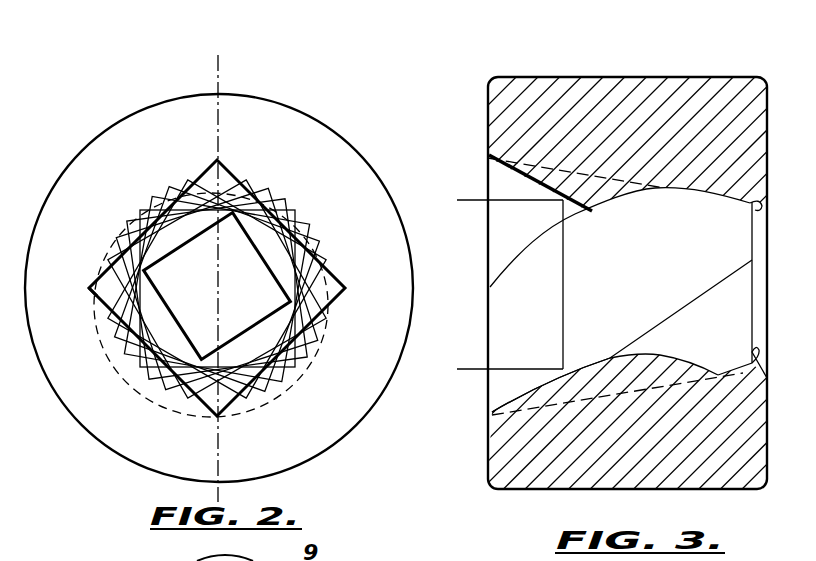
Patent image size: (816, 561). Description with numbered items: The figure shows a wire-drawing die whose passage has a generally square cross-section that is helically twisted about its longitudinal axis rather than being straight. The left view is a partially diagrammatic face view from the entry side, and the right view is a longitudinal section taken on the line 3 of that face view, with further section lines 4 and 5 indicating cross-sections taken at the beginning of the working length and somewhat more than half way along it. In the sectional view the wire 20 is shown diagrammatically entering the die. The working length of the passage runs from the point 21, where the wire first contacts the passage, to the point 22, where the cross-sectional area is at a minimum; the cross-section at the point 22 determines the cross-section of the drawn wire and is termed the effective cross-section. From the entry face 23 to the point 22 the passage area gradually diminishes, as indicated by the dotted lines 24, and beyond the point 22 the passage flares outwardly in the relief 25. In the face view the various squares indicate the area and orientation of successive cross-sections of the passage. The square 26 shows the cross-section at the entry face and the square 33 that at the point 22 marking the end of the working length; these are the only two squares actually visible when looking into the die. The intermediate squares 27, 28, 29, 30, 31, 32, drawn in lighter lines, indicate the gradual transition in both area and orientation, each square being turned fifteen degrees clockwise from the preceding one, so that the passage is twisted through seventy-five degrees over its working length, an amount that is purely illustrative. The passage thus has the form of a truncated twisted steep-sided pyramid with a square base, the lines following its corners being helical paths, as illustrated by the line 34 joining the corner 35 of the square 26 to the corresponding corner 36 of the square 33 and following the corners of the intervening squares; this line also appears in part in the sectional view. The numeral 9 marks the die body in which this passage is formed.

In FIG. 2, the section line 3— 3 is at (219, 73).
In FIG. 3, the section line 4— 4 is at (562, 25).
In FIG. 3, the section line 5— 5 is at (676, 25).
In FIG. 2, the die body 9 is at (295, 127).
In FIG. 3, the die body 9 is at (491, 491).
In FIG. 3, the wire 20 is at (561, 299).
In FIG. 3, the point of first contact 21 is at (563, 202).
In FIG. 3, the point of minimum cross-section 22 is at (752, 352).
In FIG. 3, the entry face 23 is at (500, 447).
In FIG. 3, the dotted lines 24 is at (638, 174).
In FIG. 3, the relief 25 is at (756, 210).
In FIG. 2, the square at entry face 26 is at (229, 164).
In FIG. 2, the intermediate square 27 is at (258, 180).
In FIG. 2, the intermediate square 28 is at (283, 196).
In FIG. 2, the intermediate square 29 is at (293, 222).
In FIG. 2, the intermediate square 30 is at (302, 233).
In FIG. 2, the intermediate square 31 is at (305, 268).
In FIG. 2, the intermediate square 32 is at (297, 293).
In FIG. 2, the square at end of working length 33 is at (320, 337).
In FIG. 2, the helical corner line 34 is at (129, 218).
In FIG. 2, the corner of square 26 35 is at (90, 288).
In FIG. 2, the corner of square 33 36 is at (238, 212).